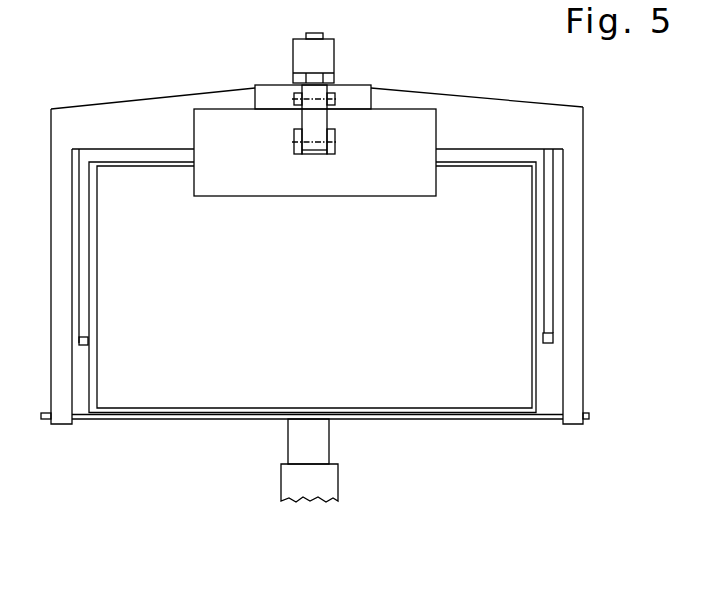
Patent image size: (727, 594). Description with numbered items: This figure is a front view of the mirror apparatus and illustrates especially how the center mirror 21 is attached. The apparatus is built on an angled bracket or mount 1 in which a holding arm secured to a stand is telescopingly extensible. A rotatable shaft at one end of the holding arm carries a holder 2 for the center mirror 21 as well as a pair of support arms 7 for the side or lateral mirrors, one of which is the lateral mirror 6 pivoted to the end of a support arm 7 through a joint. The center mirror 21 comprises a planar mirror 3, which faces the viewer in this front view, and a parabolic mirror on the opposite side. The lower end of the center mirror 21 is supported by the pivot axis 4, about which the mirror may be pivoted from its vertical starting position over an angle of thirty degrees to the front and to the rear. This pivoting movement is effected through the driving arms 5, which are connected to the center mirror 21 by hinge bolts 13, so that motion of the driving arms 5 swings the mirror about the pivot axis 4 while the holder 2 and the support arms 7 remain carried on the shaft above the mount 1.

The angled bracket or mount 1 is at (327, 59).
The holder 2 is at (265, 92).
The planar mirror 3 is at (498, 223).
The pivot axis 4 is at (543, 415).
The driving arm 5 is at (82, 255).
The lateral mirror 6 is at (424, 133).
The support arm 7 is at (319, 121).
The hinge bolt 13 is at (90, 335).
The center mirror 21 is at (138, 439).